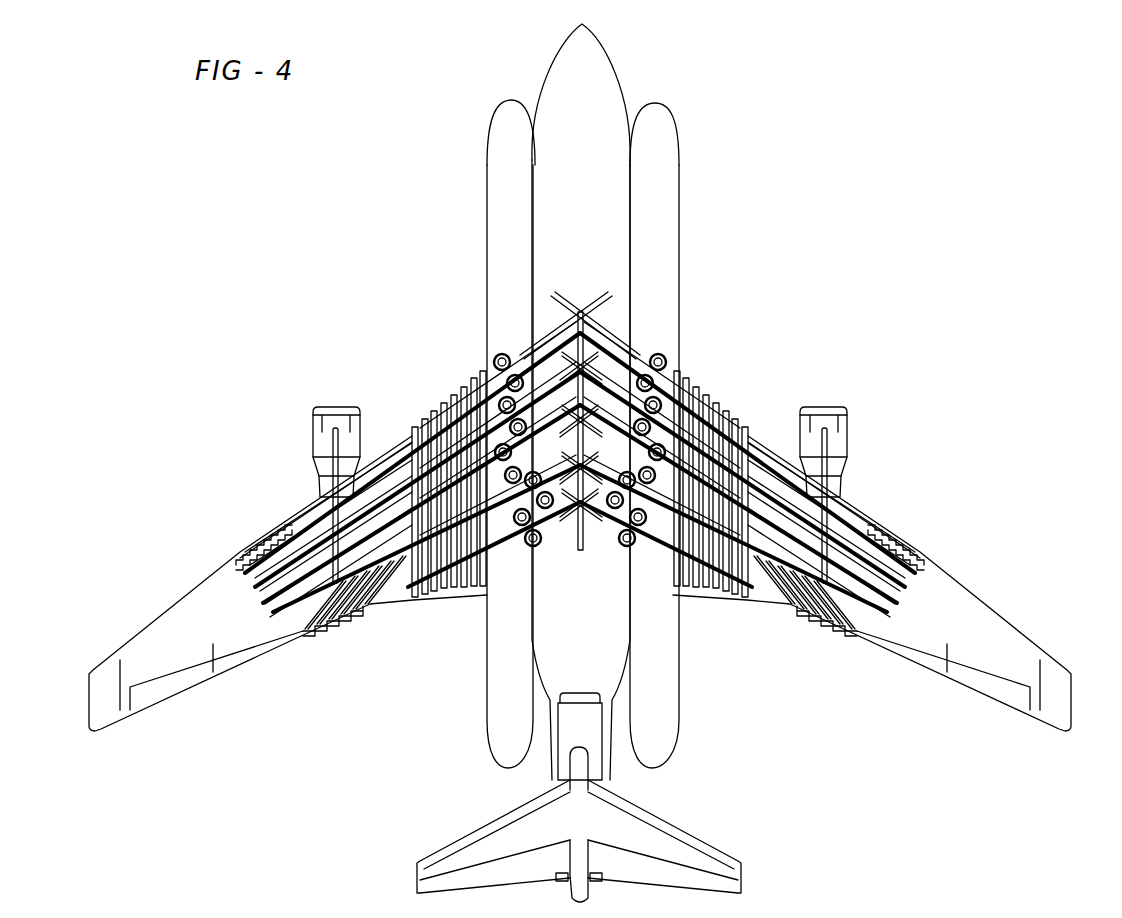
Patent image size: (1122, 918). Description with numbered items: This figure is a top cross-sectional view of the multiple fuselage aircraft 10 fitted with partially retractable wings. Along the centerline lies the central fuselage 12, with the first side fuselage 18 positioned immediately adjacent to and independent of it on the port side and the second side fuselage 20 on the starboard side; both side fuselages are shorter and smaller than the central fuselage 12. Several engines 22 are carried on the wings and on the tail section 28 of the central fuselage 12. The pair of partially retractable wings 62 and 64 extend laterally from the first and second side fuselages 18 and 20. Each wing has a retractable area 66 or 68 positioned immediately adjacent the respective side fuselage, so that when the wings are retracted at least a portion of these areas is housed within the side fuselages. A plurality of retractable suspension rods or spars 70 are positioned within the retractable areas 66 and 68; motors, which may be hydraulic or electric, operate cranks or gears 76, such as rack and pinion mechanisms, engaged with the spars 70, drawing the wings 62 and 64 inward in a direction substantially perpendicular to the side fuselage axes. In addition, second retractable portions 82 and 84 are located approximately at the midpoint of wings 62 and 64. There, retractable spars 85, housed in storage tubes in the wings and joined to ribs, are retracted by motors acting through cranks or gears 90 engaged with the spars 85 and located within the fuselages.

The aircraft 10 is at (571, 463).
The central fuselage 12 is at (603, 95).
The first side fuselage 18 is at (500, 157).
The second side fuselage 20 is at (668, 213).
The engines 22 is at (318, 430).
The tail section 28 is at (656, 820).
The partially retractable wing 62 is at (150, 650).
The partially retractable wing 64 is at (995, 660).
The retractable area 66 is at (447, 600).
The retractable area 68 is at (720, 598).
The retractable suspension rods or spars 70 is at (455, 412).
The cranks or gears 76 is at (532, 548).
The second retractable portion 82 is at (240, 556).
The second retractable portion 84 is at (890, 555).
The retractable spars 85 is at (500, 356).
The cranks or gears 90 is at (501, 354).